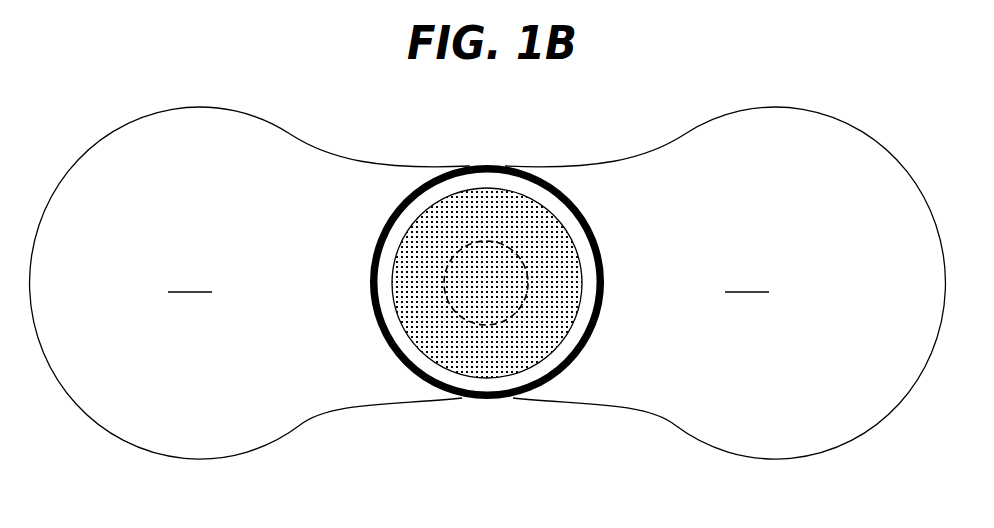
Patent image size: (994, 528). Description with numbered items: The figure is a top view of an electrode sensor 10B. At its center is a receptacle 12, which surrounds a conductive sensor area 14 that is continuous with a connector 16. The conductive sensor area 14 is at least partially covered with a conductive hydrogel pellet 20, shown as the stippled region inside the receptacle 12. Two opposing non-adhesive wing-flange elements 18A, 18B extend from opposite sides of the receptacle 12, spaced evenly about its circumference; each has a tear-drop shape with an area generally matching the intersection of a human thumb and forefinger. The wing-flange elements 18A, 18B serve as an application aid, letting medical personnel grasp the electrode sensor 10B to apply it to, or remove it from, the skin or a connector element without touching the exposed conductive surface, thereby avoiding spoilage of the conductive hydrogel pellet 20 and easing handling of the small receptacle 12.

The electrode sensor 10B is at (488, 260).
The receptacle 12 is at (533, 392).
The conductive sensor area 14 is at (458, 384).
The connector 16 is at (490, 242).
The wing-flange element 18A is at (165, 283).
The wing-flange element 18B is at (810, 283).
The conductive hydrogel pellet 20 is at (432, 243).